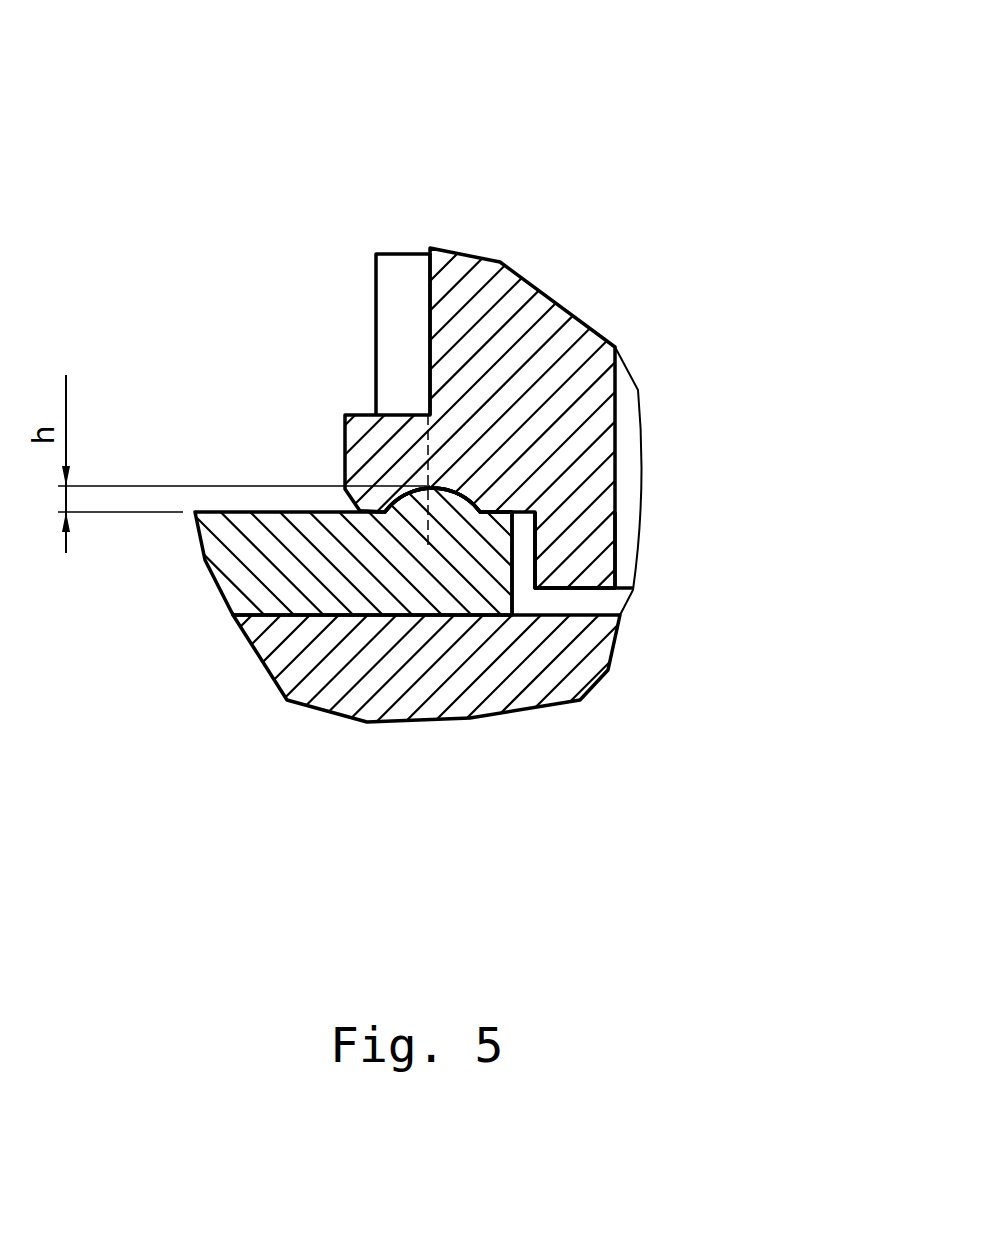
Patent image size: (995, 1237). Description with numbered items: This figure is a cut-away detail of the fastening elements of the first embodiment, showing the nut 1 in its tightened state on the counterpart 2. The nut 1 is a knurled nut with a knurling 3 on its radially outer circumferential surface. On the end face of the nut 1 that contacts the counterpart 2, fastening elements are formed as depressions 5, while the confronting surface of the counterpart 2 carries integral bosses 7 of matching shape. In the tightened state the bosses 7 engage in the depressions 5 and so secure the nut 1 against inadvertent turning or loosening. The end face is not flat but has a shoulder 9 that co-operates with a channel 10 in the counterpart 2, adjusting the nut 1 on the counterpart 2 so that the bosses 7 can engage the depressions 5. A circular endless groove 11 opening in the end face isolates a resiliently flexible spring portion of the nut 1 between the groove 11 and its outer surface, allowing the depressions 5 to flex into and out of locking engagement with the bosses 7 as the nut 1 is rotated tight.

The nut 1 is at (518, 355).
The counterpart 2 is at (268, 560).
The knurling 3 is at (402, 293).
The depression 5 is at (408, 500).
The boss 7 is at (430, 490).
The shoulder 9 is at (583, 532).
The channel 10 is at (568, 603).
The groove 11 is at (635, 481).